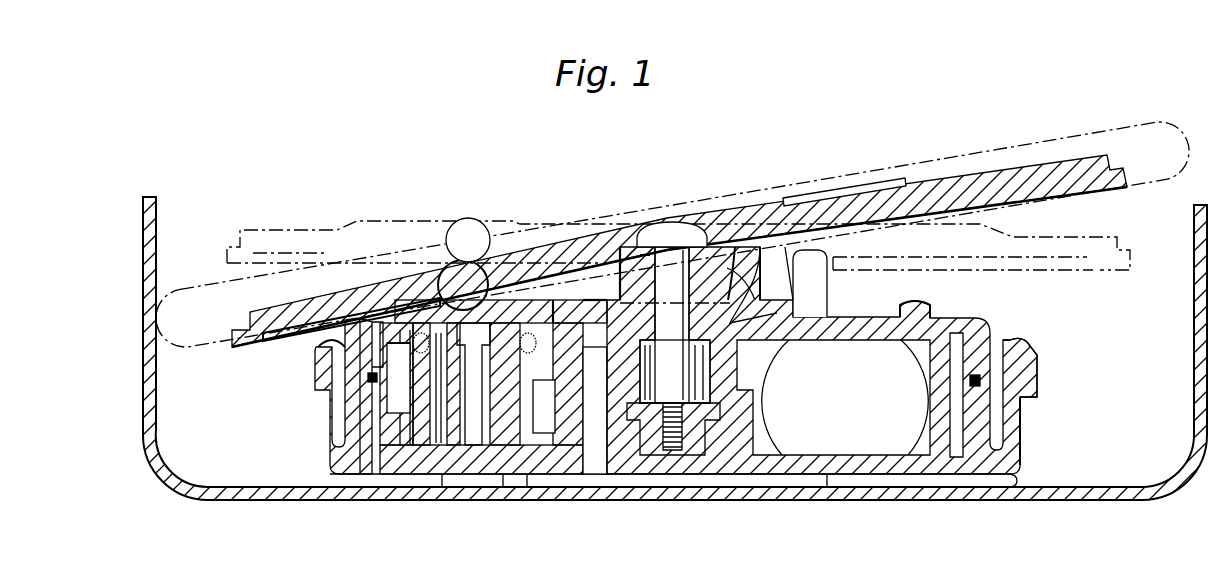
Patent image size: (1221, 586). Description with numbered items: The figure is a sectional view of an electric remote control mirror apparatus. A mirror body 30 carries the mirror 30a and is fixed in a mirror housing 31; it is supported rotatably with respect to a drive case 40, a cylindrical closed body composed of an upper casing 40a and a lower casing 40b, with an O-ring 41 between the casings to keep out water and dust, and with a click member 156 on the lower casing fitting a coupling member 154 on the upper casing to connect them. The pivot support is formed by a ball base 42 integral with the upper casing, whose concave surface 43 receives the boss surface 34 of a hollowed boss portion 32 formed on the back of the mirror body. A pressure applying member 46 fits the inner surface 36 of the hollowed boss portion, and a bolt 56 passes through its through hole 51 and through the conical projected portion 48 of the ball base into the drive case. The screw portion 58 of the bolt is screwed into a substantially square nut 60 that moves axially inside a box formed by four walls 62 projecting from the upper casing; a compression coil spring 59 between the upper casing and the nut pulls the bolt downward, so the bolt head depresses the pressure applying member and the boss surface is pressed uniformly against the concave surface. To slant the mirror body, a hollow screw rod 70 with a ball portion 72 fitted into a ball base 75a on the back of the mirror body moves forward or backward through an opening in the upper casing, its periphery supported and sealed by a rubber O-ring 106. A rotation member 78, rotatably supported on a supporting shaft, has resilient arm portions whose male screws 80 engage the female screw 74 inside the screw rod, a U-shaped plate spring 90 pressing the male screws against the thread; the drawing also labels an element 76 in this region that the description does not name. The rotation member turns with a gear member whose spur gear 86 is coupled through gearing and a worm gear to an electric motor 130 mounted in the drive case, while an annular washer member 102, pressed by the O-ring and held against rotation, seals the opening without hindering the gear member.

The mirror body 30 is at (876, 186).
The mirror 30a is at (1115, 135).
The mirror housing 31 is at (195, 490).
The hollowed boss portion 32 is at (757, 222).
The boss surface 34 is at (557, 300).
The inner surface 36 is at (600, 292).
The drive case 40 is at (1058, 357).
The upper casing 40a is at (940, 318).
The lower casing 40b is at (975, 483).
The O-ring 41 is at (332, 343).
The ball base 42 is at (777, 313).
The concave surface 43 is at (733, 300).
The pressure applying member 46 is at (716, 300).
The projected portion 48 is at (625, 300).
The through hole 51 is at (665, 290).
The bolt 56 is at (670, 222).
The screw portion 58 is at (685, 442).
The compression coil spring 59 is at (730, 412).
The nut 60 is at (660, 430).
The walls 62 is at (595, 455).
The screw rod 70 is at (405, 335).
The ball portion 72 is at (462, 280).
The female screw 74 is at (432, 470).
The ball base 75a is at (495, 300).
The rocker 76 is at (468, 447).
The rotation member 78 is at (440, 465).
The male screw 80 is at (525, 440).
The spur gear 86 is at (287, 320).
The plate spring 90 is at (492, 450).
The washer member 102 is at (380, 463).
The O-ring 106 is at (365, 315).
The electric motor 130 is at (910, 462).
The coupling member 154 is at (318, 380).
The click member 156 is at (365, 372).